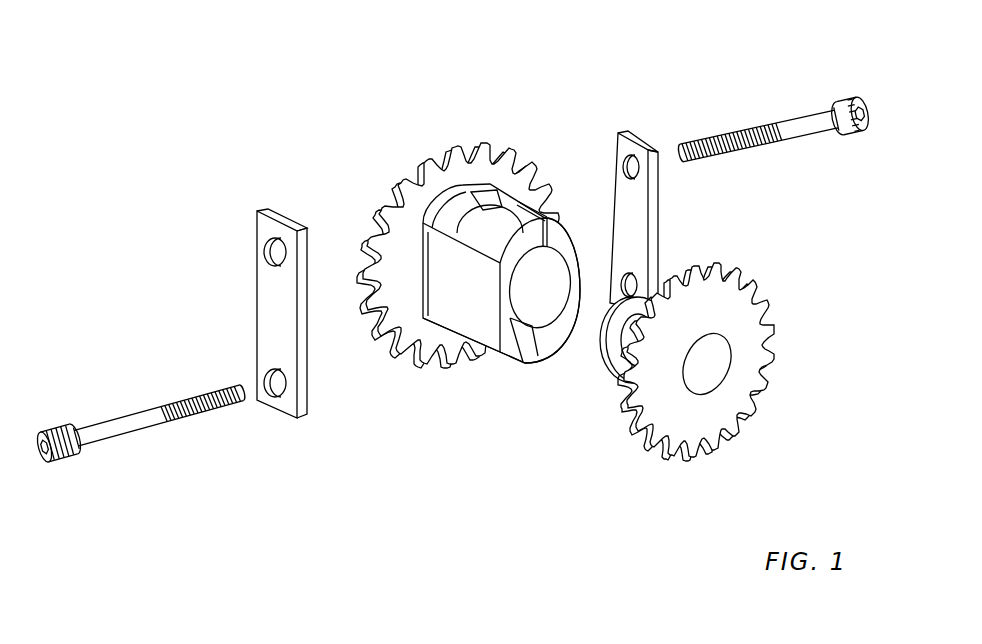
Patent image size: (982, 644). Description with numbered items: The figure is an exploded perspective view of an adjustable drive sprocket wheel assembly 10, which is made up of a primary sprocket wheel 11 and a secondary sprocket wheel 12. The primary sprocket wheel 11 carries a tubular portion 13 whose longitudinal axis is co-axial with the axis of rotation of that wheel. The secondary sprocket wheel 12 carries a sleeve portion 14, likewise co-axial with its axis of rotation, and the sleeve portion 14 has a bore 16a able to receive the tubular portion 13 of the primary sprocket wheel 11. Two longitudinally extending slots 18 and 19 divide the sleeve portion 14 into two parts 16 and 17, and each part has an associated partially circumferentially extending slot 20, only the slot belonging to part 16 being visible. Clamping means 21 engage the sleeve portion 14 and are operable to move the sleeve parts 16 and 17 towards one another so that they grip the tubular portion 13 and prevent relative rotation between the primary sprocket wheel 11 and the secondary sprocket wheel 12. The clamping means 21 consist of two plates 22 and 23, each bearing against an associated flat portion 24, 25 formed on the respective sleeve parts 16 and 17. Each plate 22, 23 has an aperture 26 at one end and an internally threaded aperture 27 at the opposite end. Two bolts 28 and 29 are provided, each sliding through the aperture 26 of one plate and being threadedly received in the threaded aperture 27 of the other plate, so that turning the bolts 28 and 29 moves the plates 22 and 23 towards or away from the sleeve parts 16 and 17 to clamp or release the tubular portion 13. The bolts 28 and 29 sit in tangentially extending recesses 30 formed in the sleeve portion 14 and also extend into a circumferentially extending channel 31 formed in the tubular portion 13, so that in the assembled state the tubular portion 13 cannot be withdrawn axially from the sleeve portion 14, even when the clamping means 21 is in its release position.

The adjustable drive sprocket wheel assembly 10 is at (504, 306).
The primary sprocket wheel 11 is at (750, 380).
The secondary sprocket wheel 12 is at (428, 158).
The tubular portion 13 is at (603, 443).
The sleeve portion 14 is at (460, 268).
The sleeve part 16 is at (557, 334).
The bore 16a is at (522, 299).
The sleeve part 17 is at (505, 368).
The longitudinally extending slot 18 is at (534, 362).
The longitudinally extending slot 19 is at (547, 228).
The partially circumferentially extending slot 20 is at (423, 283).
The clamping means 21 is at (740, 167).
The plate 22 is at (305, 418).
The plate 23 is at (657, 208).
The flat portion 24 is at (582, 258).
The flat portion 25 is at (438, 303).
The aperture 26 is at (266, 381).
The internally threaded aperture 27 is at (268, 251).
The bolt 28 is at (107, 424).
The bolt 29 is at (800, 122).
The tangentially extending recess 30 is at (482, 212).
The circumferentially extending channel 31 is at (618, 383).